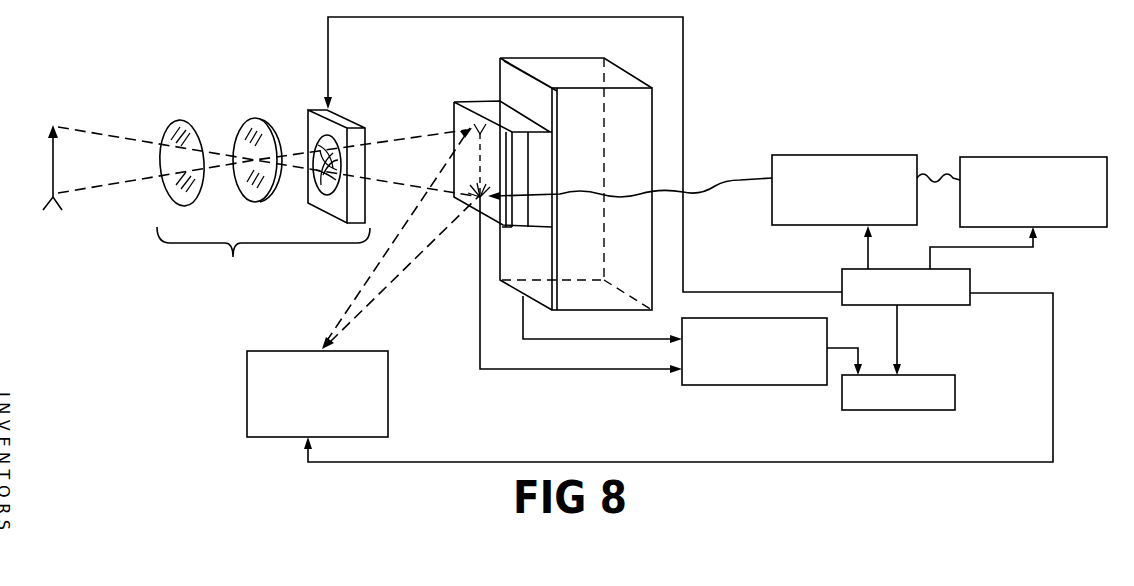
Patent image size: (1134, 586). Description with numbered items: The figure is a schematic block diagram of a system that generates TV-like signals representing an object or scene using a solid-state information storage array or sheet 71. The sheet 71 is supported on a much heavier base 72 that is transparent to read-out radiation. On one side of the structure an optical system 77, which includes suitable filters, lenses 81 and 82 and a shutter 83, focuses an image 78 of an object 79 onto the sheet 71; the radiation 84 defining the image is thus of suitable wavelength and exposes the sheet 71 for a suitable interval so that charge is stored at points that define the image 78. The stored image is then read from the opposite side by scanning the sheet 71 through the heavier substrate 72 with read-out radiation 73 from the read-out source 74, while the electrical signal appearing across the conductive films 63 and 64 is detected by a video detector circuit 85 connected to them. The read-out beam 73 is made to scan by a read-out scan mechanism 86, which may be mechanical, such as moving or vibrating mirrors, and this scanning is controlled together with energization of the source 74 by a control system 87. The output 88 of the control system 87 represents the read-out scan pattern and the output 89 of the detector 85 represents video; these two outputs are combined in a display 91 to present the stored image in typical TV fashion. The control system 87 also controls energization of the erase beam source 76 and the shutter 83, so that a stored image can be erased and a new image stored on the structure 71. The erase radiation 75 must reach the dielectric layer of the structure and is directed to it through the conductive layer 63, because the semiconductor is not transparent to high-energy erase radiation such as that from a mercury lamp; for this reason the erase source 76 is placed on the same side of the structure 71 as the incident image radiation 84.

The conductive film 63 is at (505, 230).
The conductive film 64 is at (555, 277).
The solid-state information storage sheet 71 is at (523, 167).
The base 72 is at (562, 68).
The read-out radiation 73 is at (730, 186).
The read-out source 74 is at (1018, 156).
The erase radiation 75 is at (375, 298).
The erase beam source 76 is at (247, 410).
The optical system 77 is at (242, 177).
The image 78 is at (480, 156).
The object 79 is at (55, 142).
The lens 81 is at (173, 122).
The lens 82 is at (247, 122).
The shutter 83 is at (310, 110).
The image radiation 84 is at (390, 137).
The video detector circuit 85 is at (764, 385).
The read-out scan 86 is at (873, 155).
The control system 87 is at (971, 292).
The control system output 88 is at (898, 348).
The detector output 89 is at (840, 348).
The display 91 is at (956, 390).